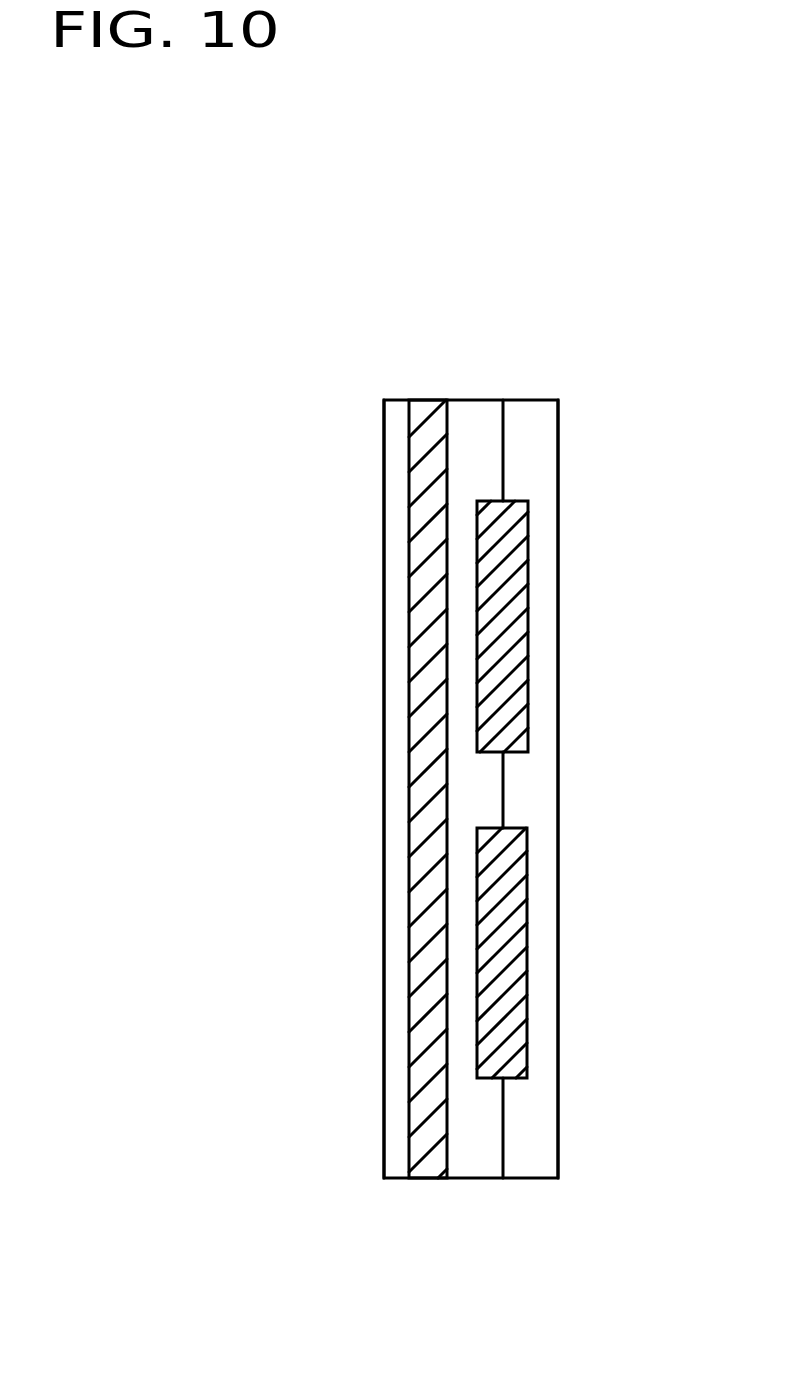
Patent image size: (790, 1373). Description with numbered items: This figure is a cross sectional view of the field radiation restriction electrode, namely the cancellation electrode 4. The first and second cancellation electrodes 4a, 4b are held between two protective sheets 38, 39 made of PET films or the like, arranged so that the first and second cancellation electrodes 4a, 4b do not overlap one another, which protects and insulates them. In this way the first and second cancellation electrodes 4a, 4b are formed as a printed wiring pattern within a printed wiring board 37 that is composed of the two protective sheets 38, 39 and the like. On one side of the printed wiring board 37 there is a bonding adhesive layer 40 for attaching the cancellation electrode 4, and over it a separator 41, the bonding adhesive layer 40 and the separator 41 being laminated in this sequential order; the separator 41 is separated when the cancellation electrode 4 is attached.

The cancellation electrode 4 is at (670, 239).
The first cancellation electrode 4a is at (525, 950).
The second cancellation electrode 4b is at (523, 623).
The printed wiring board 37 is at (562, 783).
The protective sheet 38 is at (527, 440).
The protective sheet 39 is at (472, 1150).
The bonding adhesive layer 40 is at (435, 408).
The separator 41 is at (406, 786).